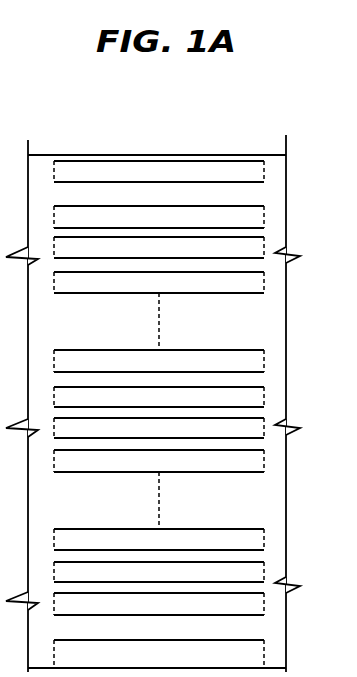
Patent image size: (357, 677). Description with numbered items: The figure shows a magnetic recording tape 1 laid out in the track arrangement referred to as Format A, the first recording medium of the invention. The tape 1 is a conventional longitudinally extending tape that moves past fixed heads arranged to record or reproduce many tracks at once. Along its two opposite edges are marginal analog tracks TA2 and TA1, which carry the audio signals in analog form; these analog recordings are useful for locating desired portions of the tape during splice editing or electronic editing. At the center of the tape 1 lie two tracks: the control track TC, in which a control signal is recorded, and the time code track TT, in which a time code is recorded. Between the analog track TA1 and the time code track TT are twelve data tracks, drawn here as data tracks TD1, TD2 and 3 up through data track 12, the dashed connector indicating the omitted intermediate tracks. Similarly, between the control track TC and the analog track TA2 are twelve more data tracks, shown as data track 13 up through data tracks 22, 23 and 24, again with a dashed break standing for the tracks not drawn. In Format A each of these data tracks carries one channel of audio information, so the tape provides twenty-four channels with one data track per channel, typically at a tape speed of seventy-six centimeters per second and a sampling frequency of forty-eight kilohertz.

The tape 1 is at (245, 154).
The analog track TA2 is at (159, 172).
The data track TD24 24 is at (159, 217).
The data track TD23 23 is at (159, 248).
The data track TD22 22 is at (159, 283).
The data track TD13 13 is at (159, 361).
The control track TC is at (159, 397).
The time code track TT is at (159, 428).
The data track TD12 12 is at (159, 461).
The data track TD3 3 is at (159, 540).
The data track TD2 is at (159, 573).
The data track TD1 is at (159, 605).
The analog track TA1 is at (159, 654).